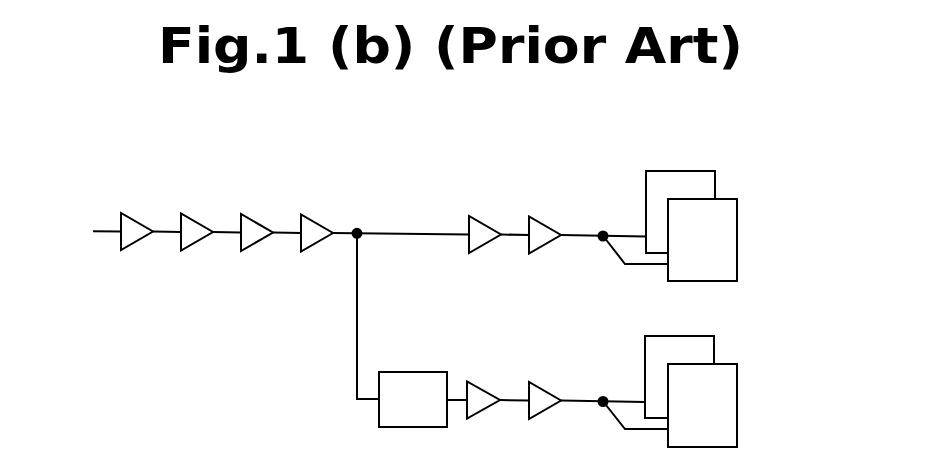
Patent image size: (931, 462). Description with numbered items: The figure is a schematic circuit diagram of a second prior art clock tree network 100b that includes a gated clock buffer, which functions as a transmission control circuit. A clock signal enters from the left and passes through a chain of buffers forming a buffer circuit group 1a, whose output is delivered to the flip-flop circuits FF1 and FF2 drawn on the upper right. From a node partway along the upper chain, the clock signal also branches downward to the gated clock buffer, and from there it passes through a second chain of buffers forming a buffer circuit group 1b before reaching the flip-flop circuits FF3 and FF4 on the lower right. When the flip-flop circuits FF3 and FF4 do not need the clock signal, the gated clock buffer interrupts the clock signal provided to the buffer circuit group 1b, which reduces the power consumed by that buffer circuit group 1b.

The clock tree network 100b is at (557, 145).
The buffer circuit group 1a is at (562, 194).
The buffer circuit group 1b is at (562, 362).
The flip-flop circuit FF1 is at (712, 171).
The flip-flop circuit FF2 is at (736, 199).
The flip-flop circuit FF3 is at (712, 336).
The flip-flop circuit FF4 is at (736, 364).